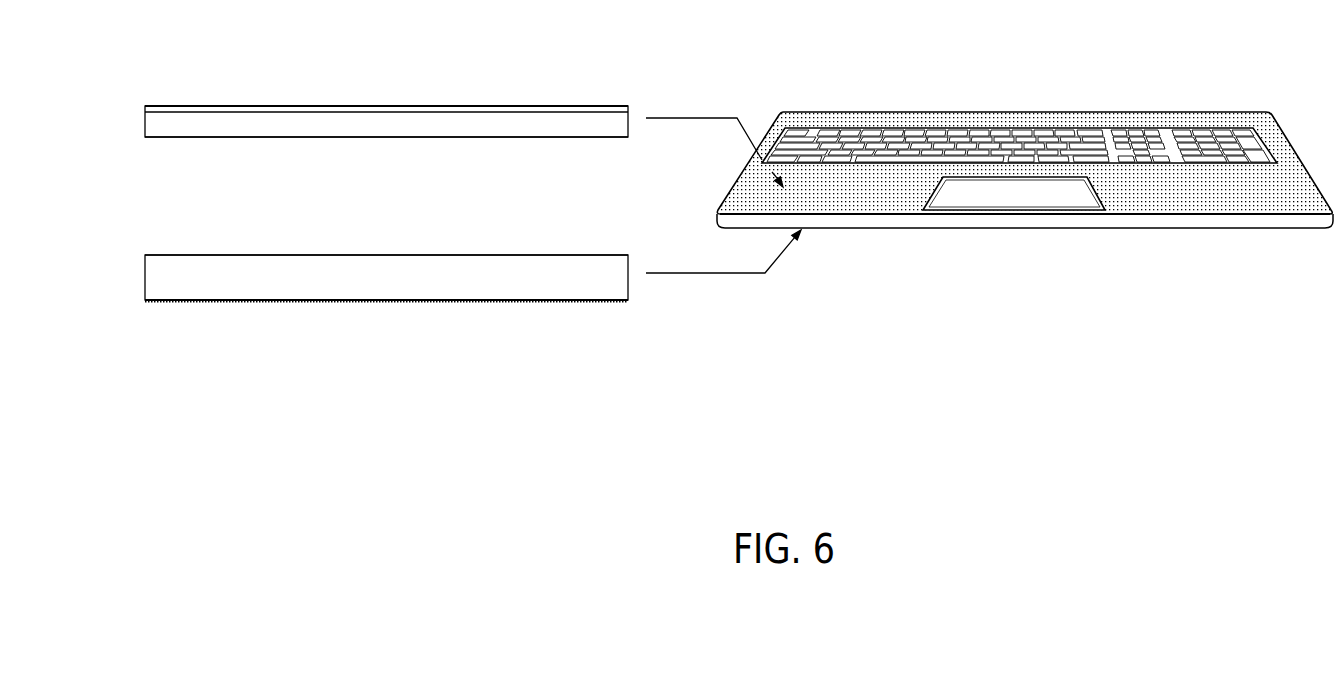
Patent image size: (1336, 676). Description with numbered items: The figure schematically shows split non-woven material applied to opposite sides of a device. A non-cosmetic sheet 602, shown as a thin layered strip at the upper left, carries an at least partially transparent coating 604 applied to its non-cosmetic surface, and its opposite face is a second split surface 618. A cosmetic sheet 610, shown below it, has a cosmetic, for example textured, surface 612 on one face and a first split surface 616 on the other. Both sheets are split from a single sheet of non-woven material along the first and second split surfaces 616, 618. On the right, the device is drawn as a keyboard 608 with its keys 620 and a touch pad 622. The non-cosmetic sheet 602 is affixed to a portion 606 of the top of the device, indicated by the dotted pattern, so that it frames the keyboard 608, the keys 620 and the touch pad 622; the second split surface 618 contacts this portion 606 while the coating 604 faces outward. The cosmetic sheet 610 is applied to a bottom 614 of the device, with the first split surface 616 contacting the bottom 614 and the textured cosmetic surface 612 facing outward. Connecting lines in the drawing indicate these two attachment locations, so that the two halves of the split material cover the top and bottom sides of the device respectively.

The non-cosmetic sheet 602 is at (355, 121).
The at least partially transparent coating 604 is at (228, 105).
The second split surface 618 is at (263, 138).
The cosmetic sheet 610 is at (353, 278).
The first split surface 616 is at (258, 255).
The cosmetic surface 612 is at (250, 301).
The keyboard 608 is at (999, 161).
The portion 606 is at (744, 175).
The bottom 614 is at (731, 233).
The keys 620 is at (1137, 112).
The touch pad 622 is at (944, 190).